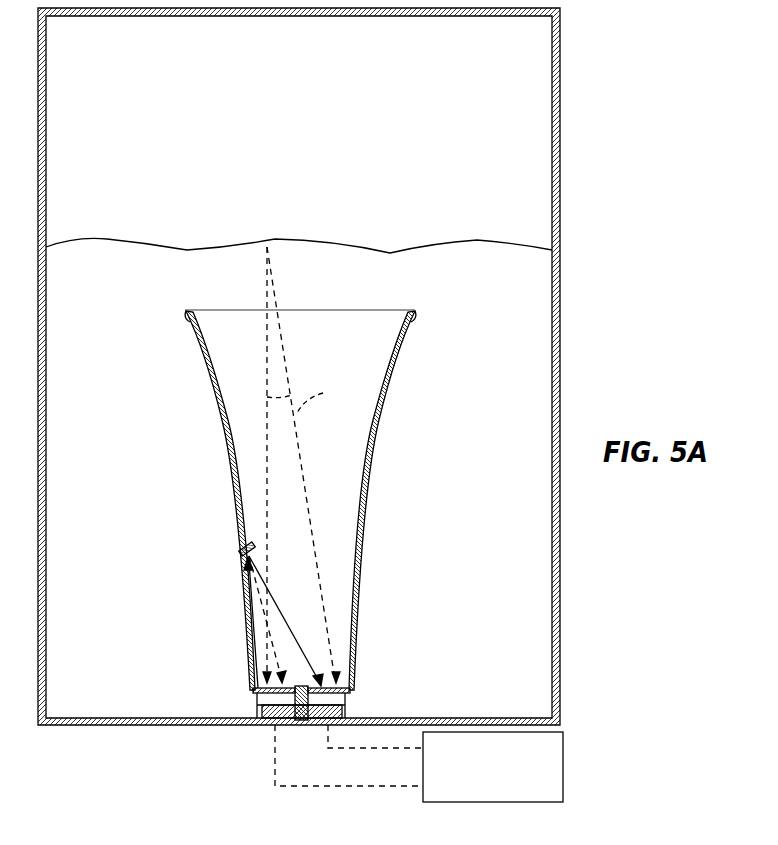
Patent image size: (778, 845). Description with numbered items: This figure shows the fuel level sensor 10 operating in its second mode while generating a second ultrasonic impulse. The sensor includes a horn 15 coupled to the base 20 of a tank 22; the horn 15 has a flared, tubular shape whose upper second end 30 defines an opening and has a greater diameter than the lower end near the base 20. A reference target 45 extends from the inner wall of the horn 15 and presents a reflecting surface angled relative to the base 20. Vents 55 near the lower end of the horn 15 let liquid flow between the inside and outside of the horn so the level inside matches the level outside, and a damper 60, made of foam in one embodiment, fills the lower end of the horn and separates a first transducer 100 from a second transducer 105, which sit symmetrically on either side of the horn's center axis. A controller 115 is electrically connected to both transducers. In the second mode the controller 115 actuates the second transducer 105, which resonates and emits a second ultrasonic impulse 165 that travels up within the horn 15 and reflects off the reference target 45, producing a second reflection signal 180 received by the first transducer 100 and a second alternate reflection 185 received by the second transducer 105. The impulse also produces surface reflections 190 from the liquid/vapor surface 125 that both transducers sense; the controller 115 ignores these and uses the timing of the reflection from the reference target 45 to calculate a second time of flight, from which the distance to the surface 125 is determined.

The fuel level sensor 10 is at (150, 292).
The horn 15 is at (377, 447).
The base 20 is at (288, 725).
The tank 22 is at (561, 333).
The second end 30 is at (400, 335).
The reference target 45 is at (245, 545).
The vents 55 is at (250, 710).
The damper 60 is at (268, 722).
The first transducer 100 is at (347, 700).
The second transducer 105 is at (290, 688).
The controller 115 is at (565, 748).
The liquid/vapor surface 125 is at (443, 243).
The second ultrasonic impulse 165 is at (252, 610).
The second reflection signal 180 is at (278, 610).
The second alternate reflection 185 is at (280, 660).
The surface reflections 190 is at (300, 396).